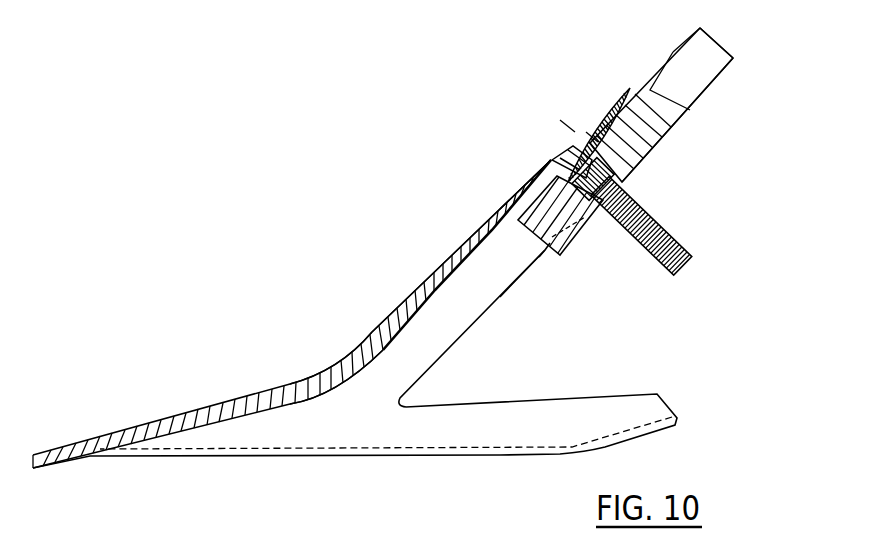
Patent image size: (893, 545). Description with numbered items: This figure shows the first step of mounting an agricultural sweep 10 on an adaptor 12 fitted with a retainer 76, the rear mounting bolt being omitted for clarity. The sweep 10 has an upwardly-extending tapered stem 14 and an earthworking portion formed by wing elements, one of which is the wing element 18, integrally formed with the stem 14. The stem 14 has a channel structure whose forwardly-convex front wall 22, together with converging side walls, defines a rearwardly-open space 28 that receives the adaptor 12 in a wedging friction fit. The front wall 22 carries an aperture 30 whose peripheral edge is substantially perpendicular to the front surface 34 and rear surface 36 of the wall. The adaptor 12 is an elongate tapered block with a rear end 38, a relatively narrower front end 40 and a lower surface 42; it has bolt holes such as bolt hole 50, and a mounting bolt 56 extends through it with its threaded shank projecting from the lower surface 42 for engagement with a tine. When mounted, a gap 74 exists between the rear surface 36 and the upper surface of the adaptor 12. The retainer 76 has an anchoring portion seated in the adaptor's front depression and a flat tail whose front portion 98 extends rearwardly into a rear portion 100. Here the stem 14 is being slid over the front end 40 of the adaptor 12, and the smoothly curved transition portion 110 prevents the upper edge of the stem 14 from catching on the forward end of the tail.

The sweep 10 is at (251, 341).
The adaptor 12 is at (710, 130).
The stem 14 is at (489, 179).
The wing element 18 is at (462, 428).
The front wall 22 is at (453, 250).
The rearwardly-open space 28 is at (453, 307).
The aperture 30 is at (480, 228).
The front surface 34 is at (365, 333).
The rear surface 36 is at (392, 327).
The rear end 38 is at (712, 43).
The front end 40 is at (536, 248).
The lower surface 42 is at (655, 157).
The bolt hole 50 is at (673, 70).
The mounting bolt 56 is at (670, 240).
The gap 74 is at (540, 165).
The retainer 76 is at (558, 100).
The front portion 98 is at (592, 130).
The rear portion 100 is at (608, 98).
The transition portion 110 is at (570, 157).